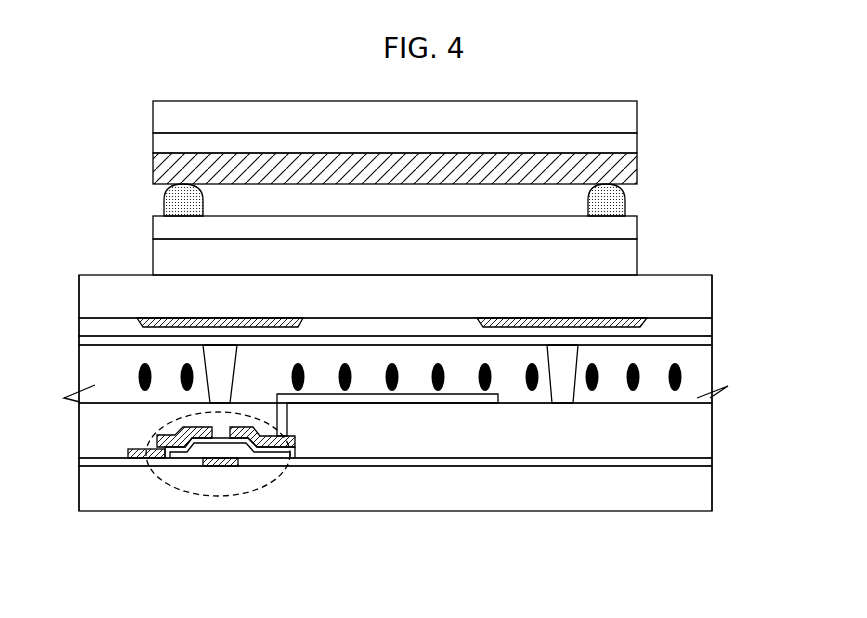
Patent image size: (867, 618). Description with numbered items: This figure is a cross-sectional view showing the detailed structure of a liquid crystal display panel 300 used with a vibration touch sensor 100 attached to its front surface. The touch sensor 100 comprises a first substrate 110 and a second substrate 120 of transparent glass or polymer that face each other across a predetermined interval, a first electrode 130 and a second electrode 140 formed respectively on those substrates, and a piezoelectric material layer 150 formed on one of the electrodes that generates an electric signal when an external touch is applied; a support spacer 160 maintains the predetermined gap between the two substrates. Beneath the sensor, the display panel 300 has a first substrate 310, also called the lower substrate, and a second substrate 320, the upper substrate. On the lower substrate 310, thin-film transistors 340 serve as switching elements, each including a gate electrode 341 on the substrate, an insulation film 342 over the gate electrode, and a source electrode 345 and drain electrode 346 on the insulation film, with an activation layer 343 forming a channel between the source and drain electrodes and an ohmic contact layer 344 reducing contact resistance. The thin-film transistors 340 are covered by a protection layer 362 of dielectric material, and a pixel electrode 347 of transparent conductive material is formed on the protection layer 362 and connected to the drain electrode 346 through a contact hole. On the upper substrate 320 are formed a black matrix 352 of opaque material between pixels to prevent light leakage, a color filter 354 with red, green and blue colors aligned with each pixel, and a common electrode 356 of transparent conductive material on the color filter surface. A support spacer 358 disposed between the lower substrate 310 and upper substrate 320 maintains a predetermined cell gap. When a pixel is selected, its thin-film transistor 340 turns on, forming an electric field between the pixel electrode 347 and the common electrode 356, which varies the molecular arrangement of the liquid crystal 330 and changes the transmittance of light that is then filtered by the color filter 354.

The vibration touch sensor 100 is at (136, 166).
The first substrate 110 is at (633, 113).
The second substrate 120 is at (633, 258).
The first electrode 130 is at (633, 143).
The second electrode 140 is at (633, 228).
The piezoelectric material layer 150 is at (633, 172).
The support spacer 160 is at (617, 203).
The display panel 300 is at (722, 366).
The first substrate 310 is at (710, 487).
The second substrate 320 is at (712, 283).
The liquid crystal 330 is at (680, 377).
The thin-film transistor 340 is at (215, 504).
The gate electrode 341 is at (237, 466).
The insulation film 342 is at (515, 463).
The activation layer 343 is at (178, 458).
The ohmic contact layer 344 is at (158, 453).
The source electrode 345 is at (128, 452).
The drain electrode 346 is at (290, 448).
The pixel electrode 347 is at (452, 403).
The black matrix 352 is at (140, 318).
The color filter 354 is at (92, 326).
The common electrode 356 is at (365, 343).
The support spacer 358 is at (212, 357).
The protection layer 362 is at (710, 445).